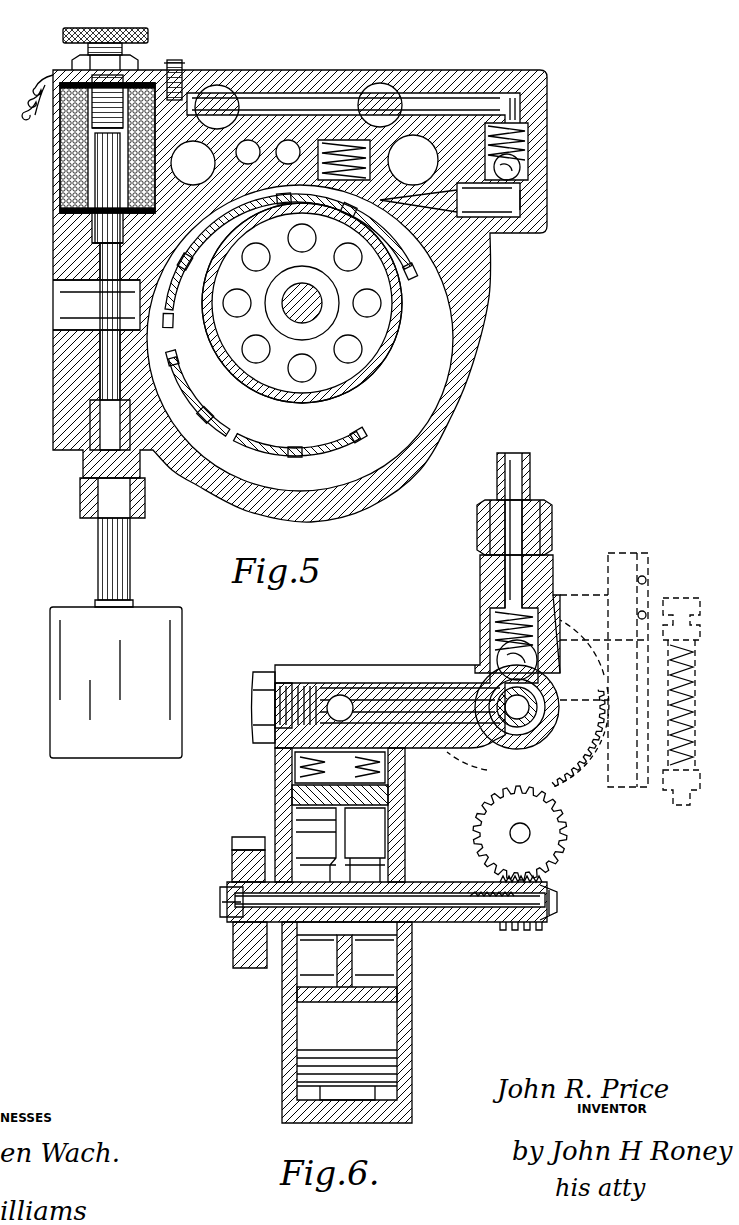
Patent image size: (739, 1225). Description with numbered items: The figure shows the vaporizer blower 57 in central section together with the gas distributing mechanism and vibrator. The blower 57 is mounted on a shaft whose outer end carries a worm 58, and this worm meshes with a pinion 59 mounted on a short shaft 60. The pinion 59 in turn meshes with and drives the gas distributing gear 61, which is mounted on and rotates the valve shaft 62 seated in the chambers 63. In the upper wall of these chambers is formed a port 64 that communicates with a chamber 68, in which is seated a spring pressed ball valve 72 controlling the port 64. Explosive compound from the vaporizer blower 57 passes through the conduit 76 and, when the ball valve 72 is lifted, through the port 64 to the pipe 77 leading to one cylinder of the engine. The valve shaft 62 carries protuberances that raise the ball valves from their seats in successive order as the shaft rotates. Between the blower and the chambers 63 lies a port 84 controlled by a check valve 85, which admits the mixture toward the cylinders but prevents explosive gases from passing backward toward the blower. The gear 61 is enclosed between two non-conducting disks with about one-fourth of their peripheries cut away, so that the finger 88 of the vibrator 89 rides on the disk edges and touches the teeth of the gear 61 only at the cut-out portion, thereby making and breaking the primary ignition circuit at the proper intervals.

In FIG. 5, the vaporizer blower 57 is at (465, 385).
In FIG. 6, the vaporizer blower 57 is at (403, 1013).
In FIG. 6, the worm 58 is at (540, 925).
In FIG. 6, the pinion 59 is at (536, 872).
In FIG. 6, the short shaft 60 is at (522, 833).
In FIG. 6, the gas distributing gear 61 is at (487, 770).
In FIG. 6, the valve shaft 62 is at (535, 722).
In FIG. 6, the chambers 63 is at (556, 652).
In FIG. 6, the port 64 is at (498, 688).
In FIG. 6, the chamber 68 is at (515, 614).
In FIG. 6, the spring pressed ball valve 72 is at (517, 655).
In FIG. 5, the conduit 76 is at (512, 208).
In FIG. 6, the conduit 76 is at (470, 710).
In FIG. 6, the pipe 77 is at (522, 473).
In FIG. 5, the port 84 is at (520, 180).
In FIG. 5, the check valve 85 is at (522, 163).
In FIG. 6, the finger 88 is at (613, 707).
In FIG. 6, the vibrator 89 is at (673, 757).